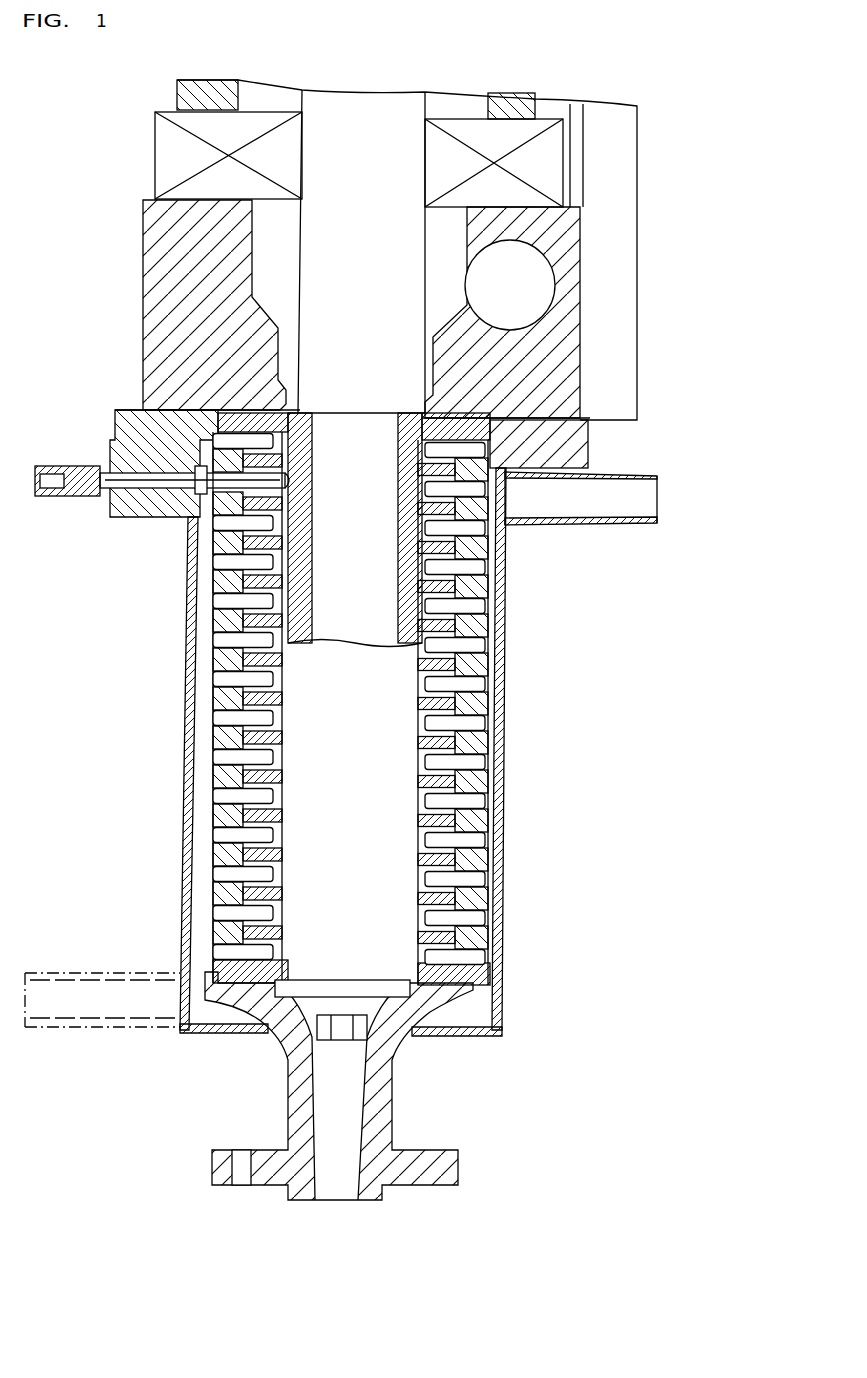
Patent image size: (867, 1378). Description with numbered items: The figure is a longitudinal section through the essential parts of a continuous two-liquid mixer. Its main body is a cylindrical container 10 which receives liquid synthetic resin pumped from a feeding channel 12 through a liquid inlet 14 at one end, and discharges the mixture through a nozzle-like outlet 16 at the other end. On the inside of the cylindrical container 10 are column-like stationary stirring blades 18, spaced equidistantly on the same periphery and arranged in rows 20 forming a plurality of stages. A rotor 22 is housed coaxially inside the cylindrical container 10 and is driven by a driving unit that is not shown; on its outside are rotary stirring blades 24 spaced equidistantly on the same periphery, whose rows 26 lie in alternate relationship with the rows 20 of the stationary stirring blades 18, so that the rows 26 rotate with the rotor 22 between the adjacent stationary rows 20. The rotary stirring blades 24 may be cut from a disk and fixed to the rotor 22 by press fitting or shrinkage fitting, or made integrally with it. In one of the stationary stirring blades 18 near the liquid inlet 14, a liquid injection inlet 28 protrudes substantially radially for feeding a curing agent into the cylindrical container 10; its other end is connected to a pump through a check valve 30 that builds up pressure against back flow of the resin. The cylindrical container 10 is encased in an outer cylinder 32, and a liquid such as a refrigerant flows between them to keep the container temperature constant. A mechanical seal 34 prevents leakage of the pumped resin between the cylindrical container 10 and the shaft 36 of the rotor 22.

The cylindrical container 10 is at (478, 708).
The feeding channel 12 is at (535, 283).
The liquid inlet 14 is at (425, 380).
The nozzle-like outlet 16 is at (352, 1097).
The stationary stirring blades 18 is at (450, 570).
The rows of stationary stirring blades 20 is at (505, 655).
The rotor 22 is at (385, 920).
The rotary stirring blades 24 is at (450, 607).
The rows of rotary stirring blades 26 is at (466, 787).
The liquid injection inlet 28 is at (275, 483).
The check valve 30 is at (168, 516).
The outer cylinder 32 is at (470, 993).
The mechanical seal 34 is at (548, 162).
The shaft 36 is at (378, 125).